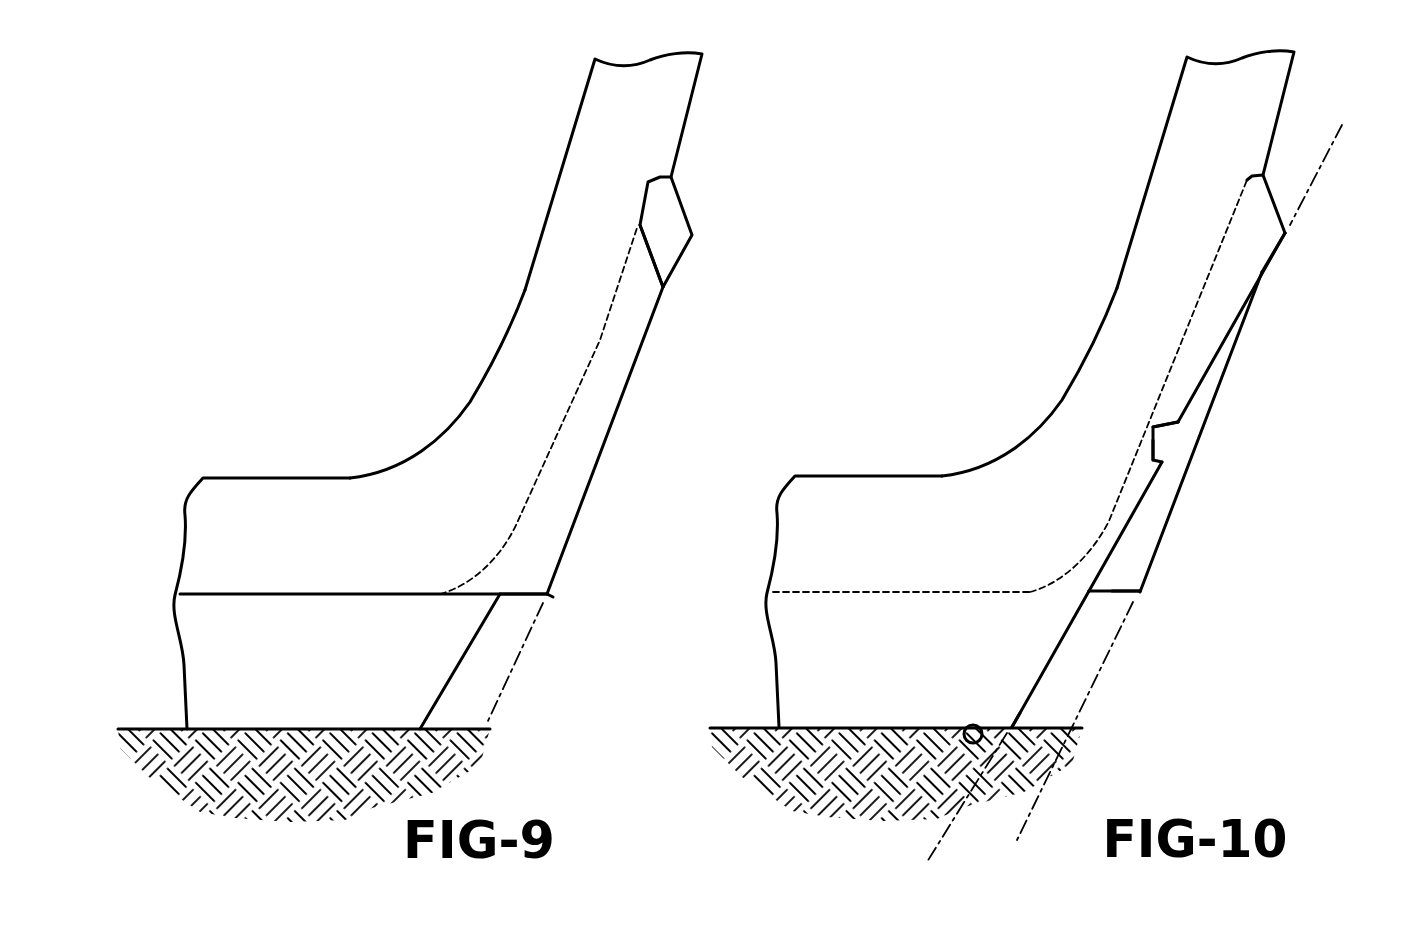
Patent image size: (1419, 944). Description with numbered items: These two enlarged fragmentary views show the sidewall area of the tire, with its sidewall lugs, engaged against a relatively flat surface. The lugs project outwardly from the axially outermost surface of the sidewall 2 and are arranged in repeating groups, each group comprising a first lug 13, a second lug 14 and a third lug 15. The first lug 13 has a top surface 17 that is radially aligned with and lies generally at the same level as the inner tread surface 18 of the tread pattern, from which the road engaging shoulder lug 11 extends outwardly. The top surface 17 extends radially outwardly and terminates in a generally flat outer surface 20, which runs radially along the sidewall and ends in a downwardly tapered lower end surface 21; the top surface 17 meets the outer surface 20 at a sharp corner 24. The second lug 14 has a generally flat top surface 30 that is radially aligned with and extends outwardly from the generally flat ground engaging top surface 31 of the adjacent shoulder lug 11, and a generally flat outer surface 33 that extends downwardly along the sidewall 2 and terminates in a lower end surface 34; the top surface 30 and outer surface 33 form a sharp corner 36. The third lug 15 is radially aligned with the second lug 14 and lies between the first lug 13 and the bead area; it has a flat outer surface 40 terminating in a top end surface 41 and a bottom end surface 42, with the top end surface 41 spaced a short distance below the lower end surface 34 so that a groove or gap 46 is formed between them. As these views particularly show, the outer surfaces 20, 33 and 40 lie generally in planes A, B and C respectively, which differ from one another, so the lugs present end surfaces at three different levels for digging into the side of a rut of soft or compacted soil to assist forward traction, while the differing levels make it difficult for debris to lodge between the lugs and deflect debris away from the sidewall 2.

In FIG. 9, the sidewall 2 is at (690, 127).
In FIG. 10, the sidewall 2 is at (1290, 85).
In FIG. 9, the shoulder lug 11 is at (227, 707).
In FIG. 10, the shoulder lug 11 is at (818, 703).
In FIG. 9, the first lug 13 is at (563, 508).
In FIG. 10, the first lug 13 is at (1133, 499).
In FIG. 10, the second lug 14 is at (1049, 674).
In FIG. 10, the third lug 15 is at (1274, 268).
In FIG. 9, the top surface 17 is at (524, 598).
In FIG. 10, the top surface 17 is at (1112, 592).
In FIG. 9, the inner tread surface 18 is at (352, 596).
In FIG. 10, the inner tread surface 18 is at (913, 593).
In FIG. 9, the outer surface 20 is at (632, 385).
In FIG. 10, the outer surface 20 is at (1178, 497).
In FIG. 9, the lower end surface 21 is at (657, 267).
In FIG. 9, the sharp corner 24 is at (520, 595).
In FIG. 10, the sharp corner 24 is at (1140, 590).
In FIG. 10, the top surface 30 is at (964, 724).
In FIG. 9, the ground engaging top surface 31 is at (273, 732).
In FIG. 10, the ground engaging top surface 31 is at (863, 730).
In FIG. 10, the outer surface 33 is at (1113, 550).
In FIG. 10, the lower end surface 34 is at (1153, 450).
In FIG. 10, the sharp corner 36 is at (1010, 723).
In FIG. 10, the outer surface 40 is at (1218, 360).
In FIG. 10, the top end surface 41 is at (1177, 427).
In FIG. 9, the bottom end surface 42 is at (683, 205).
In FIG. 10, the bottom end surface 42 is at (1273, 203).
In FIG. 10, the groove 46 is at (1160, 433).
In FIG. 9, the plane A is at (522, 650).
In FIG. 10, the plane A is at (1112, 652).
In FIG. 10, the plane B is at (945, 832).
In FIG. 10, the plane C is at (1335, 140).